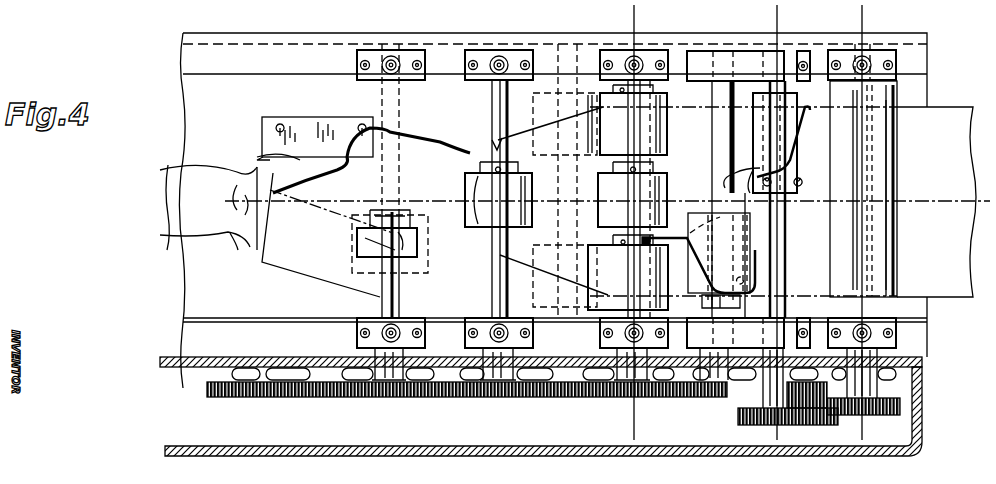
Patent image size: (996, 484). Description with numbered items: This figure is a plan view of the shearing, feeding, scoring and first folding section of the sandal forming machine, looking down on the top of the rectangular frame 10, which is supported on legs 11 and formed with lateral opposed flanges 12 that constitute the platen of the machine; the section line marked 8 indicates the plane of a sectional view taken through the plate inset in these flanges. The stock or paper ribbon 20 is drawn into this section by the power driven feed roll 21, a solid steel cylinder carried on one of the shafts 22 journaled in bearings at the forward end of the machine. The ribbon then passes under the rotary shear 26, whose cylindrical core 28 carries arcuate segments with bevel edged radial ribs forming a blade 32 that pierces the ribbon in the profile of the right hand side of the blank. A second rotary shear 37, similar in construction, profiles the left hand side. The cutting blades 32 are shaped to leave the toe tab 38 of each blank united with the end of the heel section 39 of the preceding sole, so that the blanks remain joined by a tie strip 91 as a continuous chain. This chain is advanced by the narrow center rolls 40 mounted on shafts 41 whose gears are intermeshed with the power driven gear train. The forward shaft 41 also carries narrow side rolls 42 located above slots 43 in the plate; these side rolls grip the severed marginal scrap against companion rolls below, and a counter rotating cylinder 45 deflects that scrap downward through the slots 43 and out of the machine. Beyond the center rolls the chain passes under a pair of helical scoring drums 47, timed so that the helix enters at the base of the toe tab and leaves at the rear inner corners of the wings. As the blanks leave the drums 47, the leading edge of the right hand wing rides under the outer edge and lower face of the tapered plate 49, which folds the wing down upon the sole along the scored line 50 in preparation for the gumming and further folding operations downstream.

The section line 8 is at (888, 15).
The rectangular frame 10 is at (803, 15).
The legs 11 is at (660, 15).
The lateral opposed flanges 12 is at (444, 222).
The stock or paper ribbon 20 is at (947, 107).
The feed roll 21 is at (897, 135).
The shafts 22 is at (866, 165).
The rotary shear 26 is at (800, 193).
The cylindrical core 28 is at (777, 143).
The blade 32 is at (697, 255).
The second rotary shear 37 is at (719, 260).
The toe tab 38 is at (257, 157).
The heel section 39 is at (232, 222).
The center rolls 40 is at (566, 194).
The shafts 41 is at (493, 120).
The side rolls 42 is at (628, 197).
The slots 43 is at (592, 90).
The cylinder 45 is at (540, 97).
The helical scoring drums 47 is at (420, 245).
The tapered plate 49 is at (298, 117).
The scored line 50 is at (345, 180).
The tie strip 91 is at (242, 211).